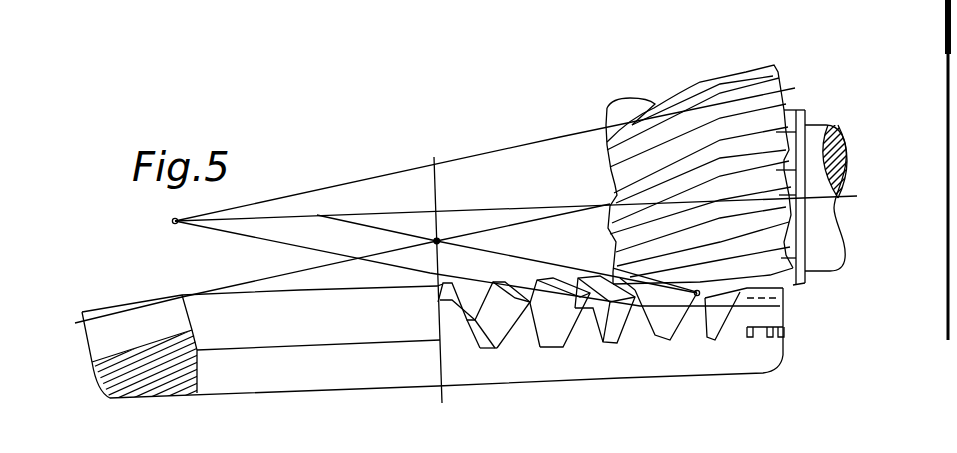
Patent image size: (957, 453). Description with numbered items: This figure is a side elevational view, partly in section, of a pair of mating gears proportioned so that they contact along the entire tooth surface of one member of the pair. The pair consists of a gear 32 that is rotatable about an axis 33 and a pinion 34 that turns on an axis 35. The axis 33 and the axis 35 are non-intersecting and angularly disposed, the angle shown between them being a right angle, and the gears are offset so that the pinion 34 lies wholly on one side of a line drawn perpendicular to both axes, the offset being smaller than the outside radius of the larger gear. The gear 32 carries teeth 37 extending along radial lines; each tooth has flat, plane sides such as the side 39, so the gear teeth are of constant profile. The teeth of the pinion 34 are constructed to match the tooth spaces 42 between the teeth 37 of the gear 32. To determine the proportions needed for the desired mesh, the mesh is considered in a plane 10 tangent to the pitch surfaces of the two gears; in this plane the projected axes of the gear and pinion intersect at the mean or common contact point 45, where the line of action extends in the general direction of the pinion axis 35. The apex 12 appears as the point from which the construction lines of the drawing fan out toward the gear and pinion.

The plane 10 is at (278, 239).
The apex point 12 is at (172, 224).
The gear 32 is at (551, 373).
The axis 33 is at (436, 203).
The pinion 34 is at (774, 64).
The axis 35 is at (517, 208).
The teeth 37 is at (663, 334).
The side 39 is at (558, 318).
The tooth spaces 42 is at (640, 322).
The common contact point 45 is at (700, 291).